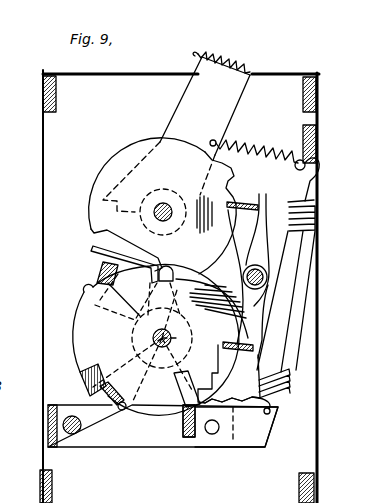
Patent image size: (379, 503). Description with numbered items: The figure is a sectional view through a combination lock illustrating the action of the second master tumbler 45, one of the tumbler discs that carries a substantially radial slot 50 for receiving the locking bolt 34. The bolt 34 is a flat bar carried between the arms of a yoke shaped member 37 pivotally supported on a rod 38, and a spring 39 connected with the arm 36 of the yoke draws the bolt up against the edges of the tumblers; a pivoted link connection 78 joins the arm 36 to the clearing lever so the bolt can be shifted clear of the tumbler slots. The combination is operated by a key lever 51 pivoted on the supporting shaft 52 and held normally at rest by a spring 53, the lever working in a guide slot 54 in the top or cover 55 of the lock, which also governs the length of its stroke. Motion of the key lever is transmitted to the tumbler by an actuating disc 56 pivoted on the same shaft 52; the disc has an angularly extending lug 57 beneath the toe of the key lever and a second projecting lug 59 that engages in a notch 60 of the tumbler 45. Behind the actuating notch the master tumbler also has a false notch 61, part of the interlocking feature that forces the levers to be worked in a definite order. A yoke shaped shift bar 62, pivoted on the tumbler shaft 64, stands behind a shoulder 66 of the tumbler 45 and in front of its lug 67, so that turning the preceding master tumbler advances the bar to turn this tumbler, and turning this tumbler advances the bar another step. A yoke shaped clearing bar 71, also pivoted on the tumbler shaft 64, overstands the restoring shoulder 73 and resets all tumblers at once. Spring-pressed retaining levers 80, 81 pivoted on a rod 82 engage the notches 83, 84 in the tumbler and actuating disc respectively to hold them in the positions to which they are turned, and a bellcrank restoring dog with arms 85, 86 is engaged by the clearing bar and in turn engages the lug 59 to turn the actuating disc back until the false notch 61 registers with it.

The locking bolt 34 is at (186, 440).
The arm of yoke shaped member 36 is at (255, 440).
The yoke shaped member 37 is at (48, 418).
The rod 38 is at (72, 435).
The spring 39 is at (292, 383).
The second master tumbler 45 is at (166, 339).
The radial slot 50 is at (175, 376).
The key lever 51 is at (240, 66).
The supporting shaft 52 is at (166, 203).
The spring 53 is at (264, 176).
The guide slot 54 is at (153, 78).
The top or cover 55 is at (300, 72).
The actuating disc 56 is at (110, 164).
The angularly extending lug 57 is at (110, 234).
The second angularly projecting lug 59 is at (160, 262).
The notch 60 is at (92, 247).
The notch 61 is at (195, 282).
The shift bar 62 is at (112, 404).
The tumbler shaft 64 is at (150, 338).
The shoulder 66 is at (80, 372).
The lug 67 is at (126, 411).
The clearing bar 71 is at (105, 263).
The restoring shoulder 73 is at (86, 287).
The pivoted link connection 78 is at (230, 399).
The retaining lever 80 is at (270, 313).
The retaining lever 81 is at (258, 248).
The rod 82 is at (267, 277).
The notch 83 is at (220, 376).
The notch 84 is at (233, 178).
The arm of restoring dog 85 is at (78, 305).
The arm of restoring dog 86 is at (171, 269).